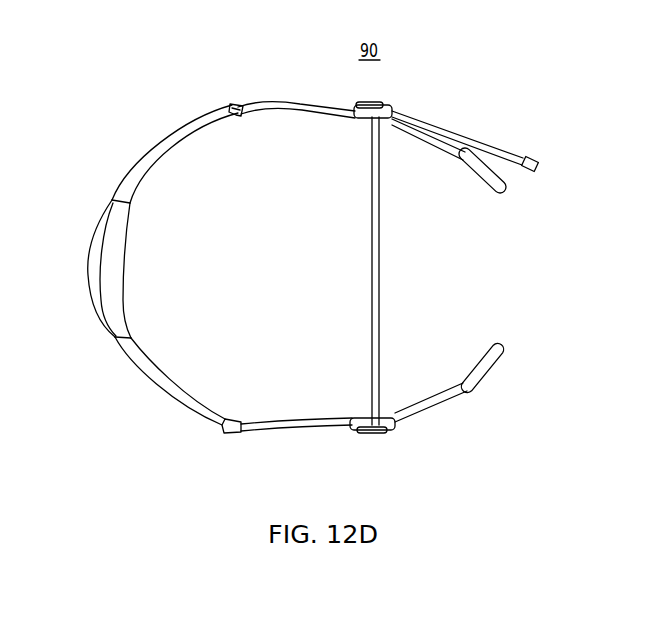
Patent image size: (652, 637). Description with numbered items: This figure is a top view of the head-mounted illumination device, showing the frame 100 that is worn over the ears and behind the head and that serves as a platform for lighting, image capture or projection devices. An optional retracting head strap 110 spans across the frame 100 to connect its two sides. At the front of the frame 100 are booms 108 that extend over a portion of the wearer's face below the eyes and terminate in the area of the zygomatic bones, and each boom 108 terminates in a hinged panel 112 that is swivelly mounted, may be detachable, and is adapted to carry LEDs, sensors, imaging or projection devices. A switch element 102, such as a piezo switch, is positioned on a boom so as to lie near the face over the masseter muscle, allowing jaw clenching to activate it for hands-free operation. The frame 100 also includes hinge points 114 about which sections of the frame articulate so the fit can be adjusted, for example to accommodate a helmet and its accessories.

The frame 100 is at (138, 160).
The switch element 102 is at (539, 165).
The boom 108 is at (446, 400).
The retracting head strap 110 is at (370, 252).
The hinged panel 112 is at (504, 188).
The hinge point 114 is at (222, 108).